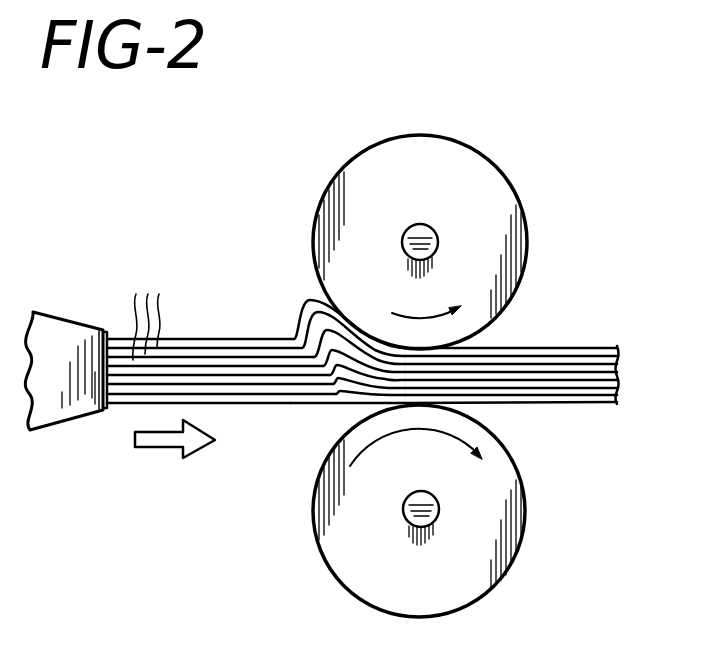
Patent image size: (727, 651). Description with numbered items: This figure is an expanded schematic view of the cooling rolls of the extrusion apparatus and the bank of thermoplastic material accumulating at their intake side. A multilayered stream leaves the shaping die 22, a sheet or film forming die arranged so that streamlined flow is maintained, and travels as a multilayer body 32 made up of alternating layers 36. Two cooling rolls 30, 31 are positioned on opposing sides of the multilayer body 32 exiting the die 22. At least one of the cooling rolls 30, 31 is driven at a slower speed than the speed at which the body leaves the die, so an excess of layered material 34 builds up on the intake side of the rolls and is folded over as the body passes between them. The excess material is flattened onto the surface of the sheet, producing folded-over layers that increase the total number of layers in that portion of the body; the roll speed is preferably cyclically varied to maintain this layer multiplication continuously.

The shaping die 22 is at (62, 330).
The cooling roll 30 is at (497, 188).
The cooling roll 31 is at (528, 505).
The multilayer body 32 is at (593, 345).
The excess layered material 34 is at (307, 305).
The alternating layers 36 is at (221, 334).